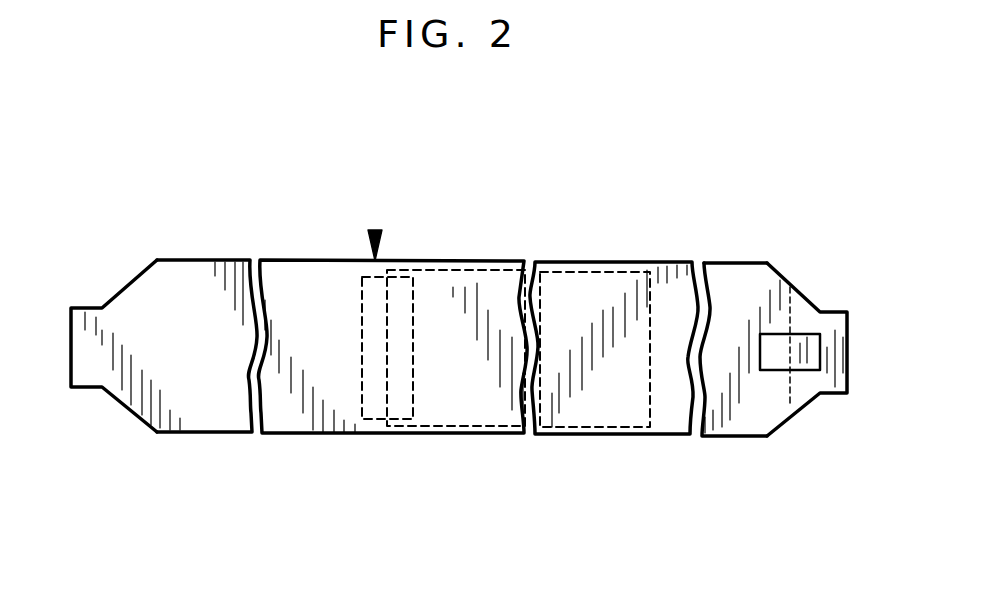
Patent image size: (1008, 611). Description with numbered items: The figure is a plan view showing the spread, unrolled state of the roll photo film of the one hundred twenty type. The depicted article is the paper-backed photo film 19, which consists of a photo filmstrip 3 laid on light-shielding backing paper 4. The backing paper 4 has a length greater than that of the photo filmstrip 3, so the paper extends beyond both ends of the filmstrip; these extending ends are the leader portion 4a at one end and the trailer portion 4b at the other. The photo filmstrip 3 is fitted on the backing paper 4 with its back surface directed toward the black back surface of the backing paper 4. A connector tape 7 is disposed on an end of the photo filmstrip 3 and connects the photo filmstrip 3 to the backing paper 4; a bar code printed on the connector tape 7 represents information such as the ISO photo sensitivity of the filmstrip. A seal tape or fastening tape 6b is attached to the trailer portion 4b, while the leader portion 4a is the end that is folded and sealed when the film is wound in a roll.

The light-shielding backing paper 4 is at (198, 277).
The leader portion 4a is at (92, 320).
The trailer portion 4b is at (760, 420).
The photo filmstrip 3 is at (473, 283).
The connector tape 7 is at (373, 400).
The paper-backed photo film 19 is at (376, 230).
The seal tape or fastening tape 6b is at (802, 345).